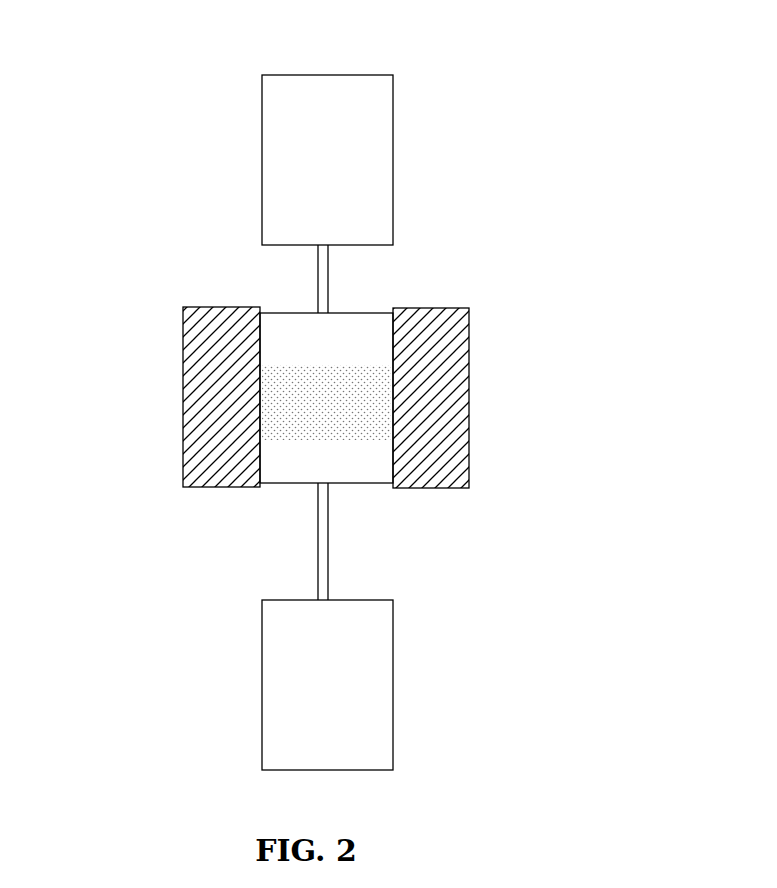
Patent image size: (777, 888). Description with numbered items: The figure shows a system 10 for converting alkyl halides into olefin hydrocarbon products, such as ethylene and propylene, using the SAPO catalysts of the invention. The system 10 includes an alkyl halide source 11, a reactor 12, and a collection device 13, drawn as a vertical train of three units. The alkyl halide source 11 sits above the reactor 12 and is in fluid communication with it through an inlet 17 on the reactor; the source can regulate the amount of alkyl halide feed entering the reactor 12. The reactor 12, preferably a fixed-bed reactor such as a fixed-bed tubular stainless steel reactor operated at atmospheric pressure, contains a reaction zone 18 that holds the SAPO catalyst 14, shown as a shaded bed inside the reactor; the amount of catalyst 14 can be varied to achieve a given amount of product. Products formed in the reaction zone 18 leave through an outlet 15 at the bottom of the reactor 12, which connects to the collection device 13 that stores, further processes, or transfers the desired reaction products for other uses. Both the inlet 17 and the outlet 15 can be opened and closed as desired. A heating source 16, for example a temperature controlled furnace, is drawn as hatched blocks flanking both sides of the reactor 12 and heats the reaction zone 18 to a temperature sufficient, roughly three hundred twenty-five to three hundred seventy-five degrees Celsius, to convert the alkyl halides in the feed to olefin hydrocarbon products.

The system 10 is at (432, 90).
The alkyl halide source 11 is at (316, 167).
The reactor 12 is at (278, 312).
The collection device 13 is at (316, 677).
The SAPO catalyst 14 is at (313, 410).
The outlet 15 is at (317, 485).
The heating source 16 is at (183, 397).
The inlet 17 is at (332, 314).
The reaction zone 18 is at (327, 365).